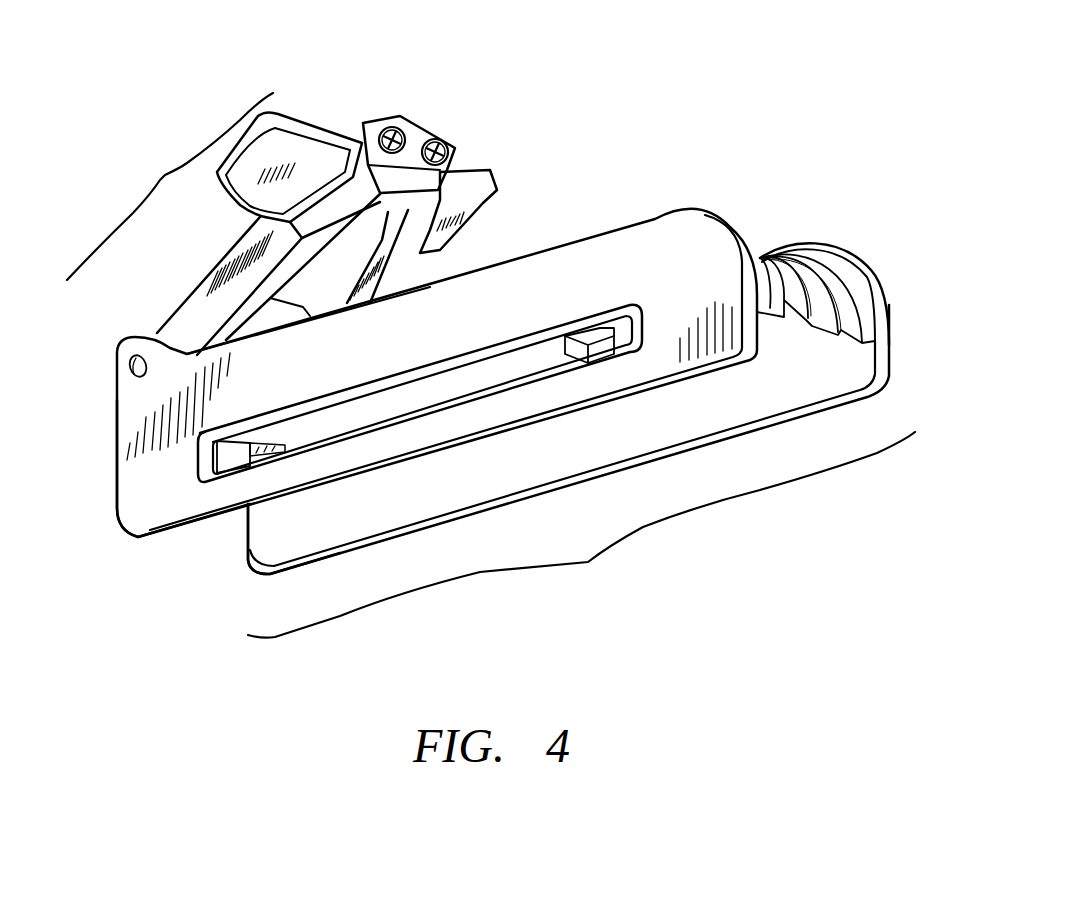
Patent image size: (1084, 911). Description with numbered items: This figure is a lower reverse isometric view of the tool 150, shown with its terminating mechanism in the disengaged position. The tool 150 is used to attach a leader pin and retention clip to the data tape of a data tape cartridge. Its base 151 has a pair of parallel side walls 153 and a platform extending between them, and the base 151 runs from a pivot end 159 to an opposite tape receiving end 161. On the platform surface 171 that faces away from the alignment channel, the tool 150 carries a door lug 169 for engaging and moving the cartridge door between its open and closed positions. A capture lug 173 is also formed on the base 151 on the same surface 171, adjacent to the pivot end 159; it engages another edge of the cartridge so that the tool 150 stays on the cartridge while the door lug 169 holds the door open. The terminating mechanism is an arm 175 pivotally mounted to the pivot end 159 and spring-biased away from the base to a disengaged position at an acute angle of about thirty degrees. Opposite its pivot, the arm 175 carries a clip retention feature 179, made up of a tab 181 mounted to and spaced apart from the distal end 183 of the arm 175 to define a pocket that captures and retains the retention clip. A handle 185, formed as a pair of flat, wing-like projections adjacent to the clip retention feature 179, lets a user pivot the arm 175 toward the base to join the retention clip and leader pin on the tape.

The tool 150 is at (766, 69).
The base 151 is at (483, 402).
The side walls 153 is at (162, 512).
The pivot end 159 is at (123, 350).
The tape receiving end 161 is at (837, 293).
The door lug 169 is at (600, 333).
The surface 171 is at (527, 363).
The capture lug 173 is at (229, 467).
The arm 175 is at (248, 224).
The clip retention feature 179 is at (433, 88).
The tab 181 is at (420, 167).
The distal end 183 is at (362, 123).
The handle 185 is at (473, 178).